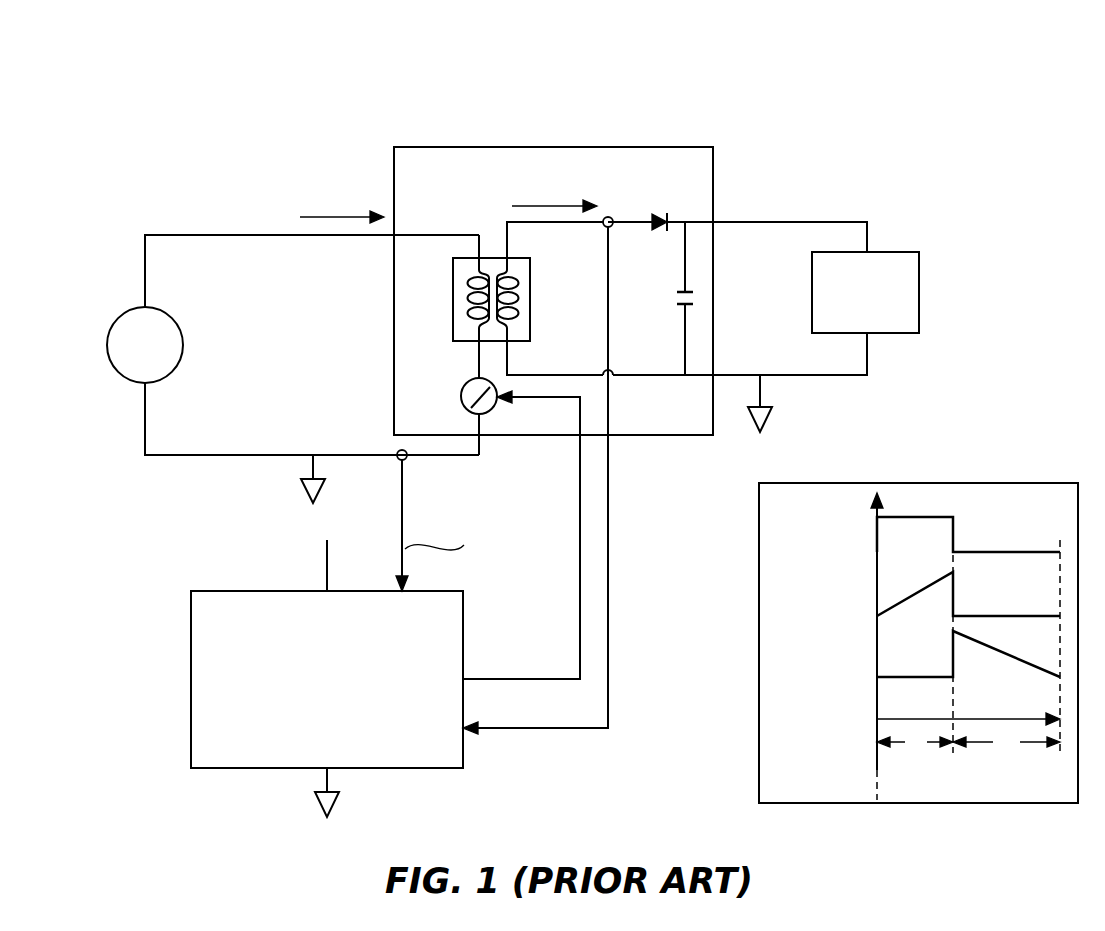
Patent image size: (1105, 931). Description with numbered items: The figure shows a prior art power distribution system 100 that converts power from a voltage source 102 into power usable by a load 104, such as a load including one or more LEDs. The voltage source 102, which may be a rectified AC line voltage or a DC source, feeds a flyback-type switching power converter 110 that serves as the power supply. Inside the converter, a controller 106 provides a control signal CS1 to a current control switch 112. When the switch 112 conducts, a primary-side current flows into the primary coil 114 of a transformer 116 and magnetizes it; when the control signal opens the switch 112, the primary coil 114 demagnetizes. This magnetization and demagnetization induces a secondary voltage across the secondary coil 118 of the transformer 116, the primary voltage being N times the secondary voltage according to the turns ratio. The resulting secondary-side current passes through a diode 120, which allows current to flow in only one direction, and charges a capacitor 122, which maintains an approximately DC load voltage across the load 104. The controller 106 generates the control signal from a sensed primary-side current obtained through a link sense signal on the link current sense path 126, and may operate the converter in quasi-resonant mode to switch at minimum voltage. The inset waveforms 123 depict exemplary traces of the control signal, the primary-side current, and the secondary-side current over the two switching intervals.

The power distribution system 100 is at (664, 112).
The voltage source 102 is at (118, 318).
The load 104 is at (865, 292).
The controller 106 is at (327, 679).
The switching power converter 110 is at (452, 147).
The current control switch 112 is at (461, 391).
The primary coil 114 is at (470, 318).
The transformer 116 is at (498, 258).
The secondary coil 118 is at (515, 318).
The diode 120 is at (655, 219).
The capacitor 122 is at (681, 297).
The waveforms 123 is at (898, 483).
The link current sense path 126 is at (401, 508).